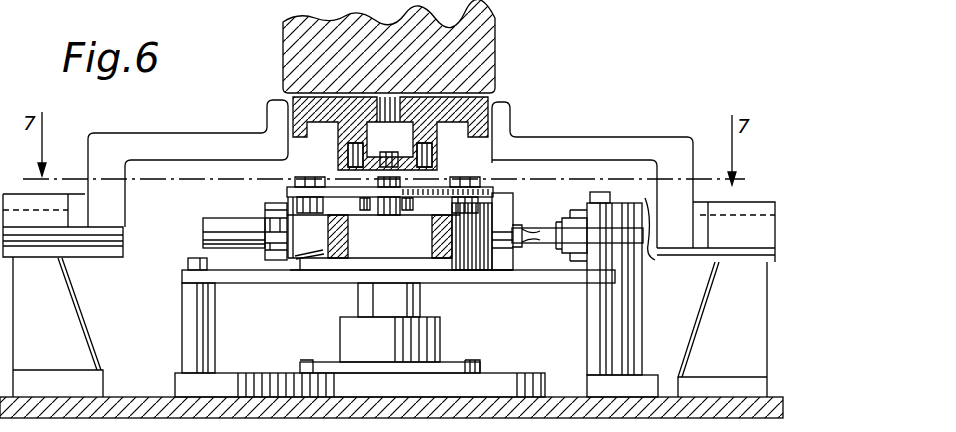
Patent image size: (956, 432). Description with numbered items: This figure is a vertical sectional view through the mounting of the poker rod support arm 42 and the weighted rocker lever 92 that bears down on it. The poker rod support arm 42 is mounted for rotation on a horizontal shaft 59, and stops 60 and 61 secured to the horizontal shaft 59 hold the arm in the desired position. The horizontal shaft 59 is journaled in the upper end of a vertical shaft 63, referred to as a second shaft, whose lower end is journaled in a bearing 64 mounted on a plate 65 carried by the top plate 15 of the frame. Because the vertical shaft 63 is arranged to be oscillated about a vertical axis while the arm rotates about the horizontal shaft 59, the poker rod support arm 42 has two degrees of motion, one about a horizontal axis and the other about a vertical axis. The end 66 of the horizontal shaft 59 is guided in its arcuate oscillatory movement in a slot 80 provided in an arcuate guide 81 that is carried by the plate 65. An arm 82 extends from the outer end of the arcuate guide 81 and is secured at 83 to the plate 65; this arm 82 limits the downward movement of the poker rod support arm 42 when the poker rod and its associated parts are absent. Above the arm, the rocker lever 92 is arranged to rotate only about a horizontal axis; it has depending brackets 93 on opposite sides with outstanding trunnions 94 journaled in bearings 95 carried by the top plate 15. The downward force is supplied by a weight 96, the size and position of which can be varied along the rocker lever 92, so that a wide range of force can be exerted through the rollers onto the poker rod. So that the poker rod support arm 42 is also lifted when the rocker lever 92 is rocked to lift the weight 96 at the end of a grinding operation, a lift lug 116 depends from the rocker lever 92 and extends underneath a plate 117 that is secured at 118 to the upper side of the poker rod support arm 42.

The top plate 15 is at (146, 397).
The poker rod support arm 42 is at (313, 252).
The horizontal shaft 59 is at (212, 220).
The stop 60 is at (267, 205).
The stop 61 is at (510, 204).
The vertical shaft 63 is at (420, 303).
The bearing 64 is at (347, 335).
The plate 65 is at (175, 377).
The end of horizontal shaft 66 is at (645, 255).
The slot 80 is at (630, 235).
The arcuate guide 81 is at (637, 320).
The arm 82 is at (547, 277).
The securing point 83 is at (187, 263).
The rocker lever 92 is at (473, 110).
The depending brackets 93 is at (115, 140).
The trunnions 94 is at (52, 262).
The bearings 95 is at (17, 197).
The weight 96 is at (285, 52).
The lift lug 116 is at (390, 205).
The plate 117 is at (437, 193).
The securing point 118 is at (317, 175).